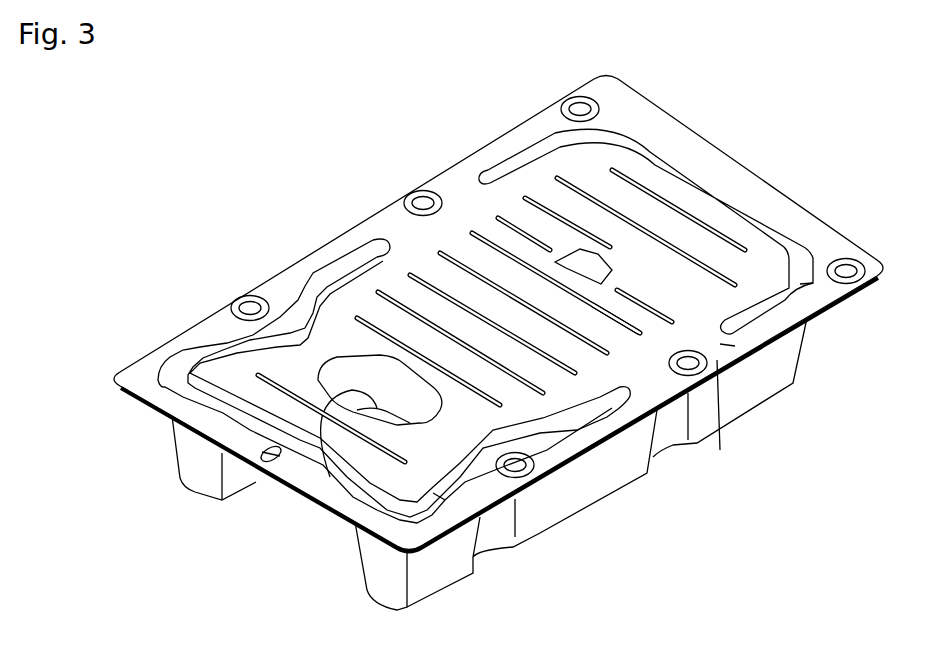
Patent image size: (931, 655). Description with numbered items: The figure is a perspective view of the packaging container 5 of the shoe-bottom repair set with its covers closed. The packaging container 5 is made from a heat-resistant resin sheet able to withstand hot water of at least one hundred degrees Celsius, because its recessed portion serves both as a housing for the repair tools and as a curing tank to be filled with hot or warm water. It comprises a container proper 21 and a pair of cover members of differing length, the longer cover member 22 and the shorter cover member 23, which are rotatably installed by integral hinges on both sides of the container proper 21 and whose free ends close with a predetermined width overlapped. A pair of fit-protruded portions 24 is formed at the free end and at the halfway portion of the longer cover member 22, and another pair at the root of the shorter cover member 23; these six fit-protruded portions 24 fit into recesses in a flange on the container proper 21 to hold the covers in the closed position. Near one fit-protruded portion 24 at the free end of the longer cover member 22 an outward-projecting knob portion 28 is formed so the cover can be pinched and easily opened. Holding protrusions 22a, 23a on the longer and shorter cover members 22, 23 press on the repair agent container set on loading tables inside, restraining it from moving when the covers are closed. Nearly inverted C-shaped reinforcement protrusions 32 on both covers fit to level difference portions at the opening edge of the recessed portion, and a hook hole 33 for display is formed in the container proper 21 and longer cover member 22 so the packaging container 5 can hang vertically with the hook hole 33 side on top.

The packaging container 5 is at (330, 190).
The container proper 21 is at (632, 488).
The longer cover member 22 is at (285, 270).
The holding protrusion 22a is at (330, 410).
The shorter cover member 23 is at (760, 196).
The holding protrusion 23a is at (587, 266).
The fit-protruded portion 24 is at (593, 106).
The knob portion 28 is at (722, 342).
The reinforcement protrusion 32 is at (813, 284).
The hook hole 33 is at (256, 458).